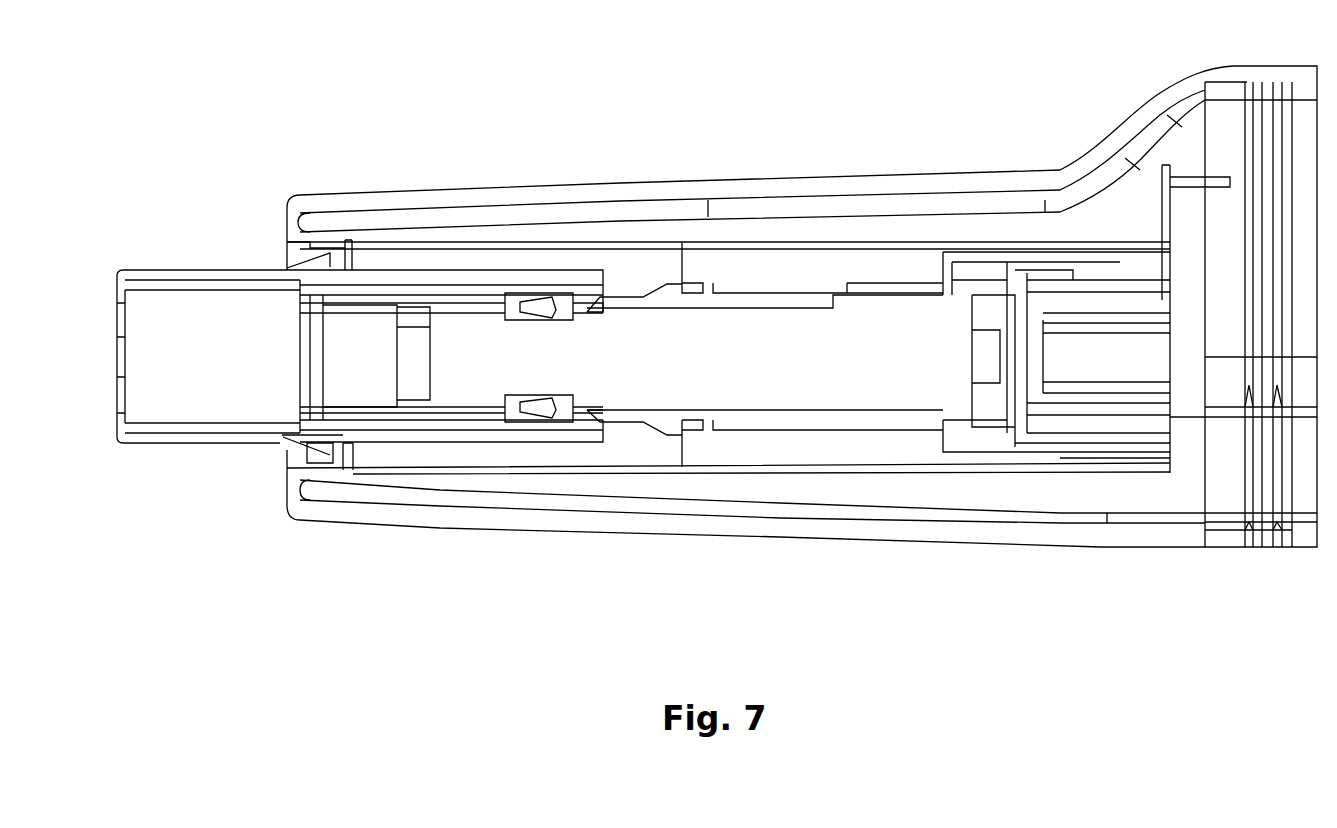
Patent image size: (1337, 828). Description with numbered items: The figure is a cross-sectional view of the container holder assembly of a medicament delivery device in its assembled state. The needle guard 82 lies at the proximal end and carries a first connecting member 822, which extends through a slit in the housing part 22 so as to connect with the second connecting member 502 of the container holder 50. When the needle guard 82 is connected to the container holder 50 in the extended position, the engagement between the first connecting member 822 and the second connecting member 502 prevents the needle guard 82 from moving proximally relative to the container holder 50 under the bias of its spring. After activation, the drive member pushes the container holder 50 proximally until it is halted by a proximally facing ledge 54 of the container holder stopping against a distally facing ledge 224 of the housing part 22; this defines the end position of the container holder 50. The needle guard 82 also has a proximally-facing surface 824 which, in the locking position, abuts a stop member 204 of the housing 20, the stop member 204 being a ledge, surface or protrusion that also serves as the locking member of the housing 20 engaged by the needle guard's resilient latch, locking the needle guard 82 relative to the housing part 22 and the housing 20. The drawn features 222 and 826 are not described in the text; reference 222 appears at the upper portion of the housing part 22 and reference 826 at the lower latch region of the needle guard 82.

The housing 20 is at (830, 187).
The housing part 22 is at (823, 423).
The upper housing portion 222 is at (708, 285).
The distally facing ledge 224 is at (953, 450).
The container holder 50 is at (727, 413).
The second connecting member 502 is at (530, 303).
The proximally facing ledge 54 is at (967, 295).
The needle guard 82 is at (143, 277).
The first connecting member 822 is at (607, 298).
The proximally-facing surface 824 is at (353, 257).
The lower latch bar 826 is at (307, 447).
The stop member 204 is at (348, 258).